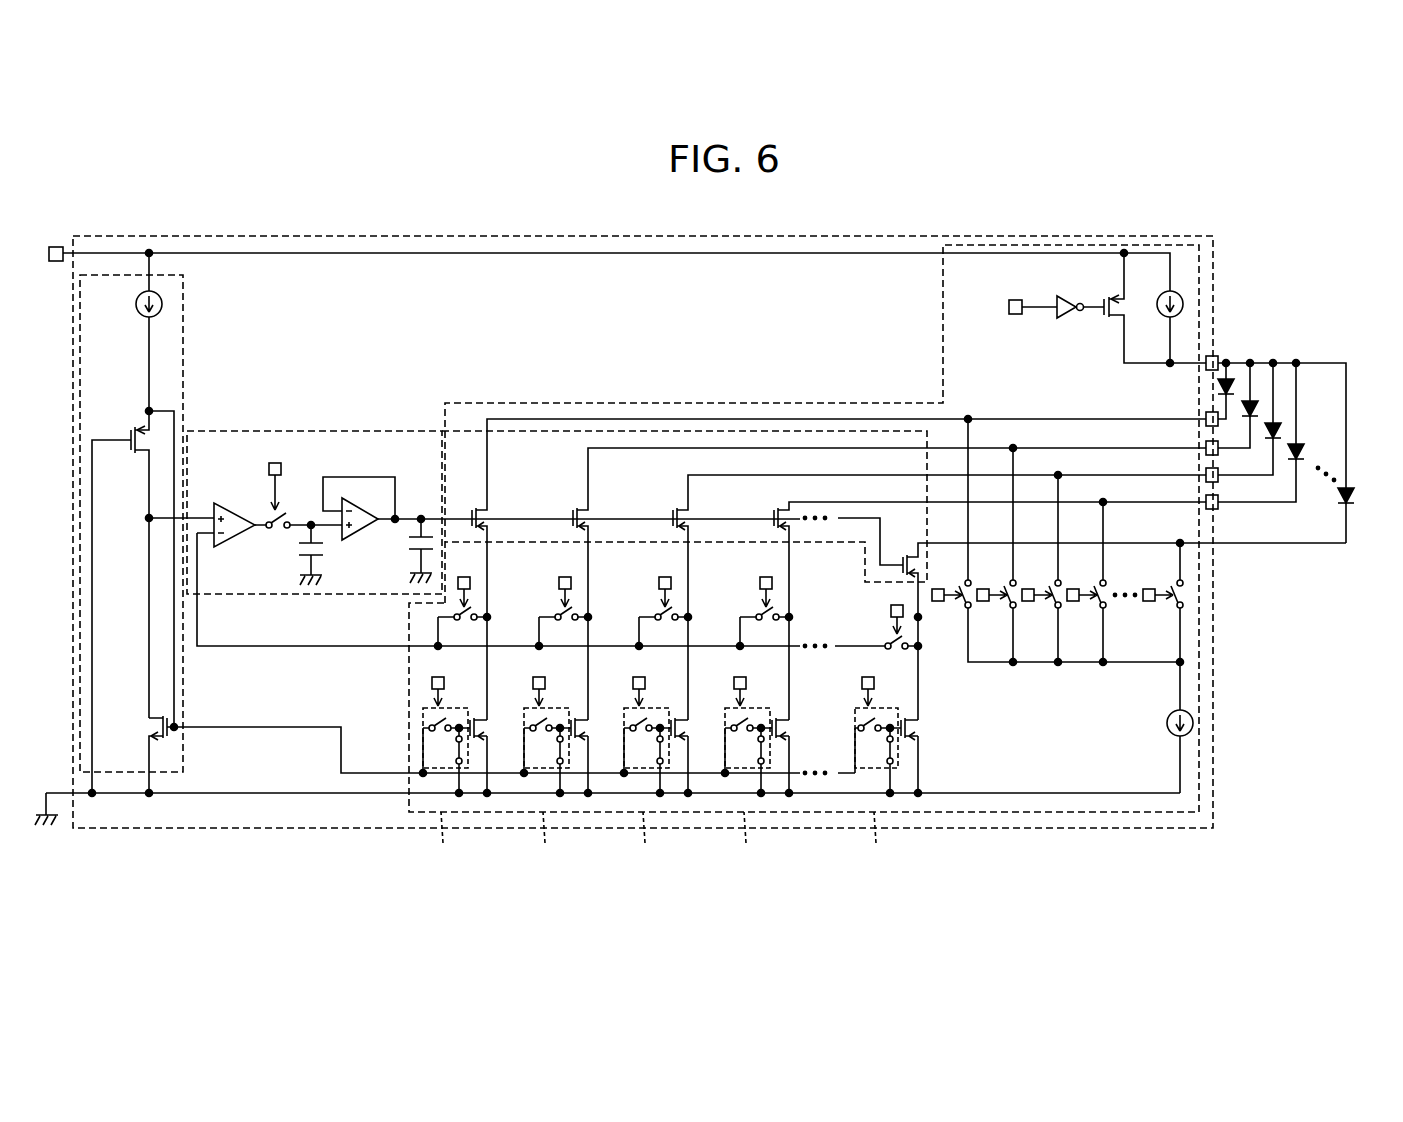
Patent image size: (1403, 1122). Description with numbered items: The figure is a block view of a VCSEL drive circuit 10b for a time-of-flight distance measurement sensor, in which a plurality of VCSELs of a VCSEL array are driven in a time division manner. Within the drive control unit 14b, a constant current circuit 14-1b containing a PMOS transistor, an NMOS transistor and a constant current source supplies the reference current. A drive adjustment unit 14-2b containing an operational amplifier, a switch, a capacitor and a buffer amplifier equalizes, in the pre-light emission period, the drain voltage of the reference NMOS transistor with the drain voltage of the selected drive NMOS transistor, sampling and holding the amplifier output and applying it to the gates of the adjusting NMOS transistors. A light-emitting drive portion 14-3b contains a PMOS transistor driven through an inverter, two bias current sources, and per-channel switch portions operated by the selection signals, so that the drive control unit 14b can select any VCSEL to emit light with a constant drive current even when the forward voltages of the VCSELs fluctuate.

The VCSEL drive circuit 10b is at (1297, 272).
The drive control unit 14b is at (1214, 826).
The constant current circuit 14-1b is at (184, 334).
The drive adjustment unit 14-2b is at (229, 430).
The light-emitting drive portion 14-3b is at (453, 402).